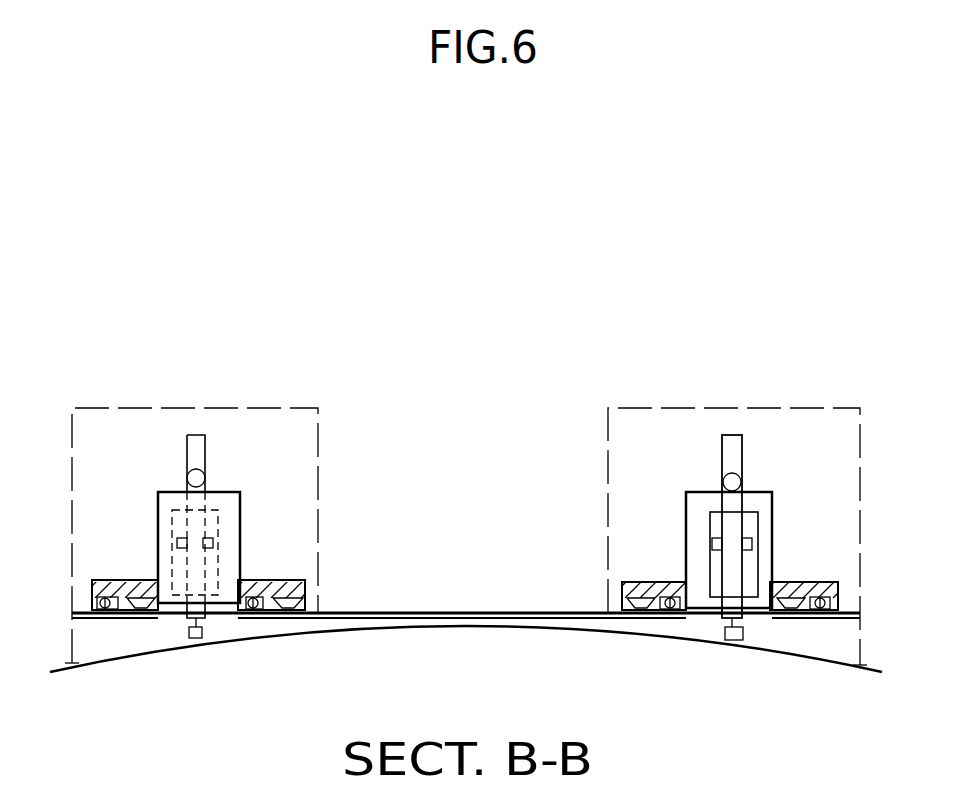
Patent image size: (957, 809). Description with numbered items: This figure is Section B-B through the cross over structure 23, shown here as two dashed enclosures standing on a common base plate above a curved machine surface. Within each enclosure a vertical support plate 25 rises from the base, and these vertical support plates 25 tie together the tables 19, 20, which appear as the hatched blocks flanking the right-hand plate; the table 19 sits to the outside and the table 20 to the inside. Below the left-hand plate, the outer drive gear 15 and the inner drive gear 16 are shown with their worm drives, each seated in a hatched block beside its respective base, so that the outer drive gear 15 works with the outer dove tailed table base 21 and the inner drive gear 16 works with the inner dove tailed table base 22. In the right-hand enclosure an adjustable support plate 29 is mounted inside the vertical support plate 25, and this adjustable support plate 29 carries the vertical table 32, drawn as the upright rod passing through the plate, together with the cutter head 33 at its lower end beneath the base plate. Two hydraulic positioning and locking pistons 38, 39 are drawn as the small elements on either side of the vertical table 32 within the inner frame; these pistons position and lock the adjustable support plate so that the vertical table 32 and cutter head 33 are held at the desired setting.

The outer drive gear 15 is at (104, 605).
The inner drive gear 16 is at (252, 605).
The table 19 is at (792, 582).
The table 20 is at (633, 582).
The outer dove tailed table base 21 is at (140, 604).
The inner dove tailed table base 22 is at (288, 605).
The cross over structure 23 is at (608, 425).
The vertical support plates 25 is at (223, 495).
The adjustable support plate 29 is at (752, 532).
The vertical table 32 is at (723, 435).
The cutter head 33 is at (740, 640).
The hydraulic positioning and locking piston 38 is at (754, 538).
The hydraulic positioning and locking piston 39 is at (717, 543).